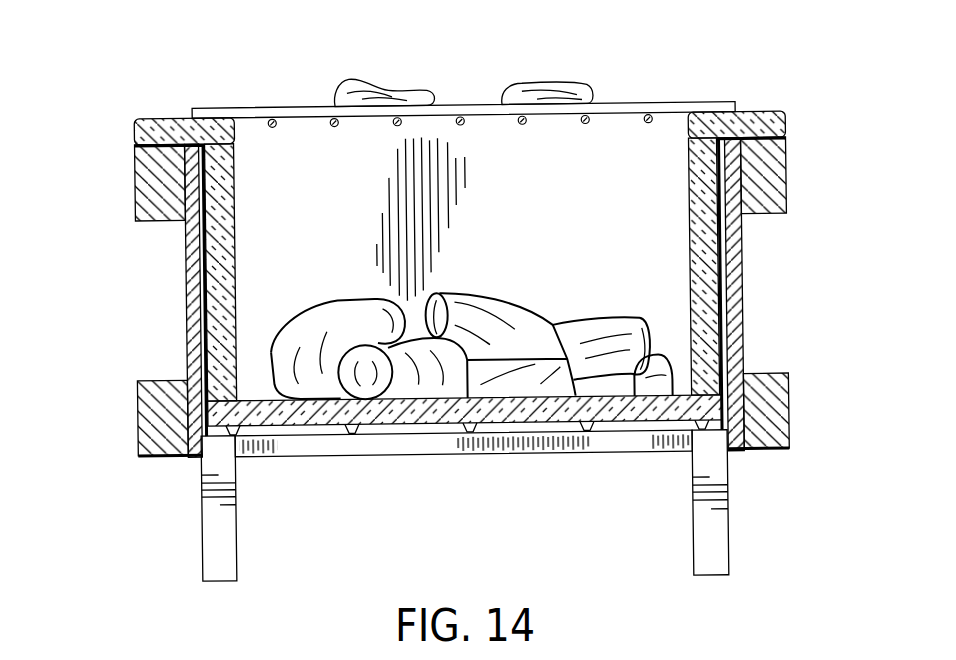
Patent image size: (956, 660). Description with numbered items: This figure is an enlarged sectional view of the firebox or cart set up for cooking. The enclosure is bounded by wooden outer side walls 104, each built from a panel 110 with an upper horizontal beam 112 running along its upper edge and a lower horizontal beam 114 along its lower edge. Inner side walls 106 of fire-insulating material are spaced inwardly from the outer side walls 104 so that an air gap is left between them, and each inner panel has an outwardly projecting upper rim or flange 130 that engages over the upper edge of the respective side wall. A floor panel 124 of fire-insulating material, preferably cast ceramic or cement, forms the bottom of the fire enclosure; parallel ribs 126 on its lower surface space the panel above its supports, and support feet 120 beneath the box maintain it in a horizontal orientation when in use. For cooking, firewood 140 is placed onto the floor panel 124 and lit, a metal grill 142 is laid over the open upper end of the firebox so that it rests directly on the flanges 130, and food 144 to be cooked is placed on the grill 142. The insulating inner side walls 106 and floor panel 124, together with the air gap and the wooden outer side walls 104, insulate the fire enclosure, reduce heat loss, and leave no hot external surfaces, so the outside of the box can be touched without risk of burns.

The outer side walls 104 is at (165, 329).
The inner side walls 106 is at (234, 237).
The panel 110 is at (188, 265).
The upper horizontal beam 112 is at (149, 189).
The lower horizontal beam 114 is at (144, 403).
The support feet 120 is at (211, 529).
The floor panel 124 is at (524, 414).
The ribs 126 is at (462, 432).
The upper rim or flange 130 is at (153, 116).
The firewood 140 is at (493, 305).
The metal grill 142 is at (648, 106).
The food 144 is at (533, 81).